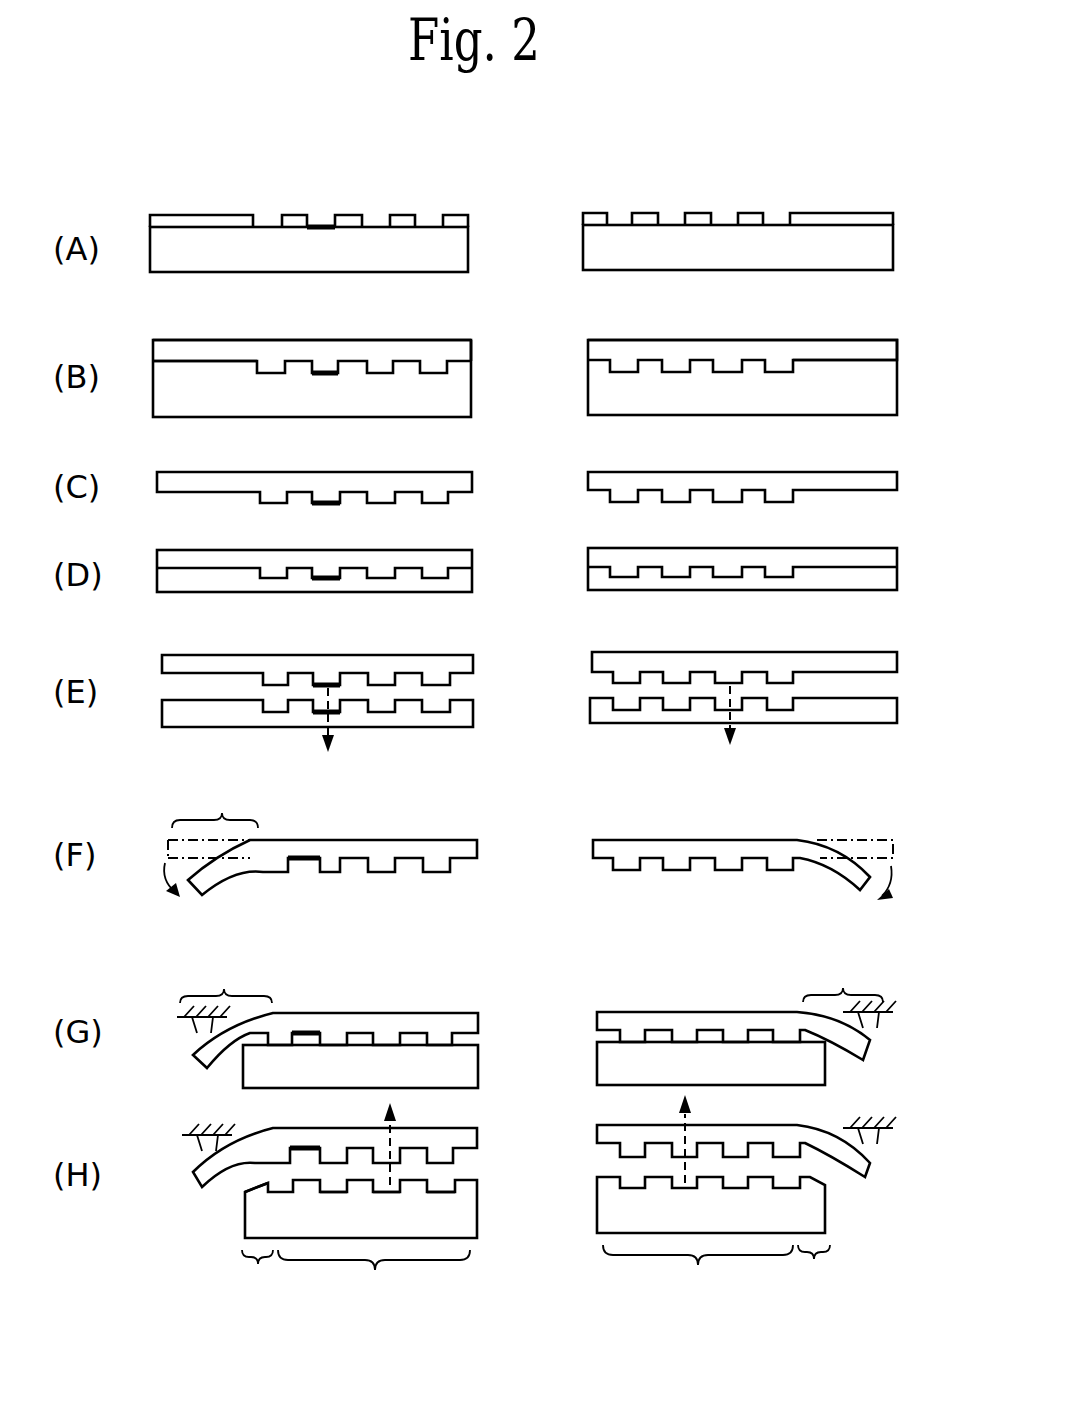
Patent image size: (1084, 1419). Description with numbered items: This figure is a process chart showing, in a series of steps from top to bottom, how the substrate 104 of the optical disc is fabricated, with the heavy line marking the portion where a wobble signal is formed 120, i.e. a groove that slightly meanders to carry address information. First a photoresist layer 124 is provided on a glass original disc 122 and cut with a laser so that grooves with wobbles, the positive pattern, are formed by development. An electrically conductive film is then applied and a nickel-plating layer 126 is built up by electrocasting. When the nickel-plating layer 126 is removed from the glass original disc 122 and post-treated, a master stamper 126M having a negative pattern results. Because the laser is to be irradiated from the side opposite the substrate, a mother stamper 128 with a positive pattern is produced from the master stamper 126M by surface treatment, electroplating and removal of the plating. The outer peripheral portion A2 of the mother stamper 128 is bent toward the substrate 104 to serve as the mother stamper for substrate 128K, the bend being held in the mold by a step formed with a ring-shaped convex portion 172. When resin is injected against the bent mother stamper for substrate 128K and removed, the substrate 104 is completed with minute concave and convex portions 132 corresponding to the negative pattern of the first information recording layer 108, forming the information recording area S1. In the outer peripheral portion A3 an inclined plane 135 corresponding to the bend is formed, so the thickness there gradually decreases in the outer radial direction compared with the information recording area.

The portion where a wobble signal is formed 120 is at (329, 222).
The glass original disc 122 is at (450, 241).
The photoresist layer 124 is at (452, 220).
The nickel-plating layer 126 is at (447, 355).
The master stamper 126M is at (452, 490).
The mother stamper 128 is at (466, 580).
The mother stamper for substrate 128K is at (456, 850).
The substrate 104 is at (466, 1068).
The first information recording layer 108 is at (339, 1183).
The minute concave and convex portions 132 is at (440, 1187).
The inclined plane 135 is at (266, 1183).
The ring-shaped convex portion 172 is at (877, 1018).
The outer peripheral portion of the mother stamper A2 is at (527, 894).
The outer peripheral portion of the minute concave and convex portions A3 is at (538, 1270).
The information recording area S1 is at (535, 1274).